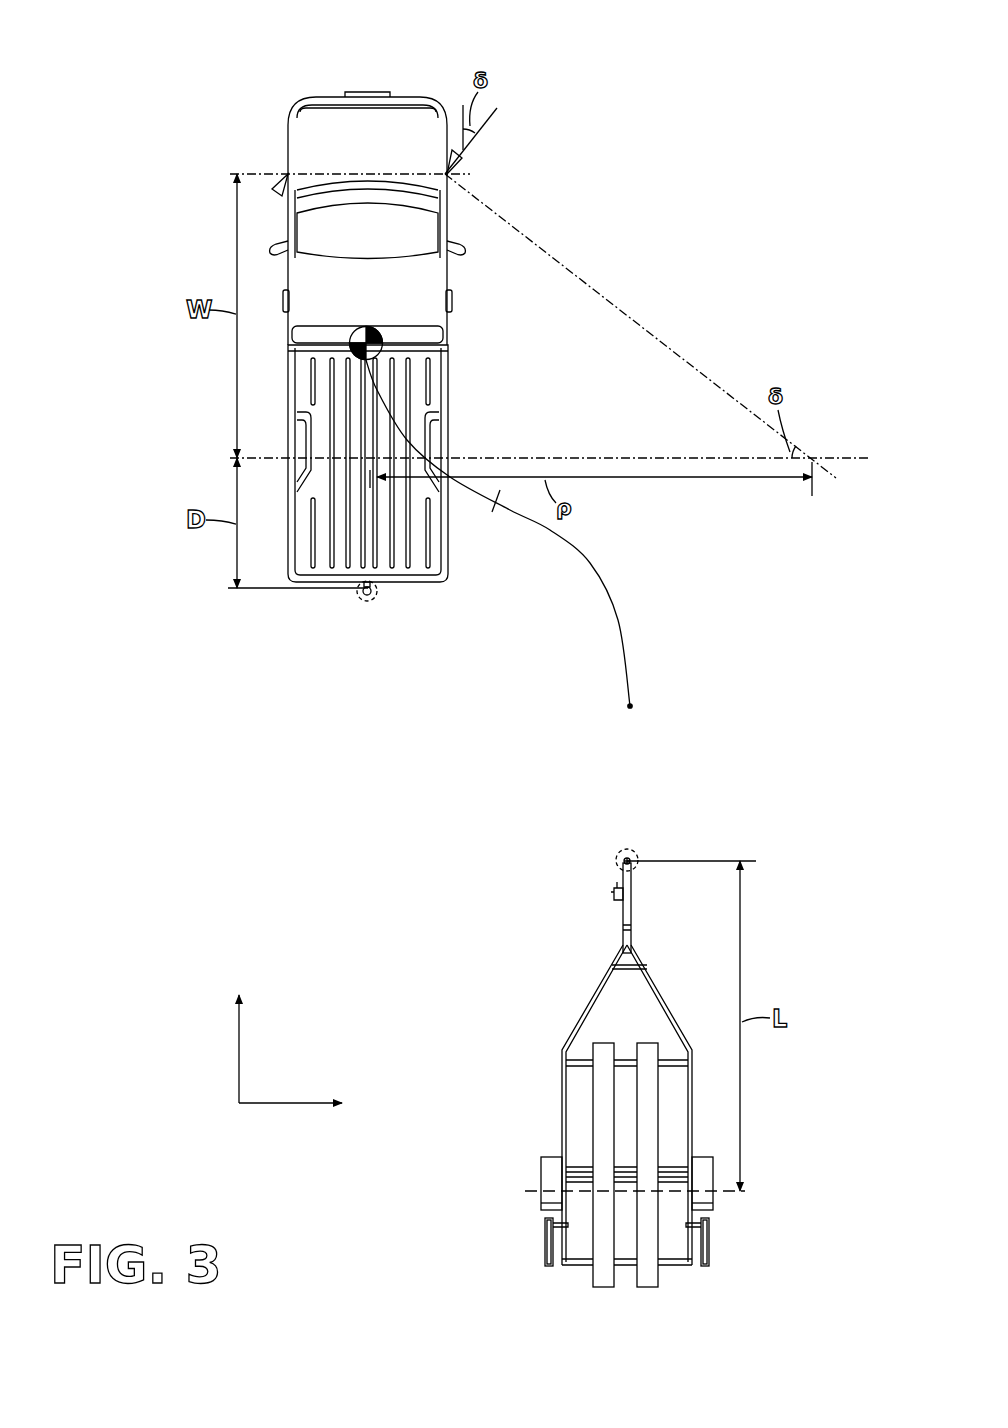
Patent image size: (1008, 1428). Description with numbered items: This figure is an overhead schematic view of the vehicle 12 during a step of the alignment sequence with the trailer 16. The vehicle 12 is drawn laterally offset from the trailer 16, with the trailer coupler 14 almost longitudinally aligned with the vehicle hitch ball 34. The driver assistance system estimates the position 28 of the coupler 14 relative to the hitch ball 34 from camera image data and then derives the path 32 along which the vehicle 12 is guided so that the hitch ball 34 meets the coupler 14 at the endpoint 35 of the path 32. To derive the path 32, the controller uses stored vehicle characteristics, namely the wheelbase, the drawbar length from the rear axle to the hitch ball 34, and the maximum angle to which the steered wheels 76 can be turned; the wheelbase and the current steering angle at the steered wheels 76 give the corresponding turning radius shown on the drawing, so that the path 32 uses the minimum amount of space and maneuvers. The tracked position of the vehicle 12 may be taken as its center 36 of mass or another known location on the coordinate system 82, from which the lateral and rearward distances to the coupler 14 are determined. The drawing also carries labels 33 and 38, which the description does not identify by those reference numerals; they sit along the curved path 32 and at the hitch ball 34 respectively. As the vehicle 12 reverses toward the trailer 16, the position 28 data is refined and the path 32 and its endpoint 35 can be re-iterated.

The vehicle 12 is at (266, 94).
The path 32 is at (772, 56).
The steered wheels 76 is at (283, 185).
The center of vehicle 36 is at (352, 352).
The vehicle path / curvature 33 is at (476, 500).
The endpoint 35 is at (633, 705).
The hitch ball 34 is at (362, 595).
The hitch connection point 38 is at (376, 598).
The trailer 16 is at (559, 1105).
The coupler 14 is at (634, 866).
The position of coupler 28 is at (640, 853).
The coordinate system 82 is at (288, 1114).